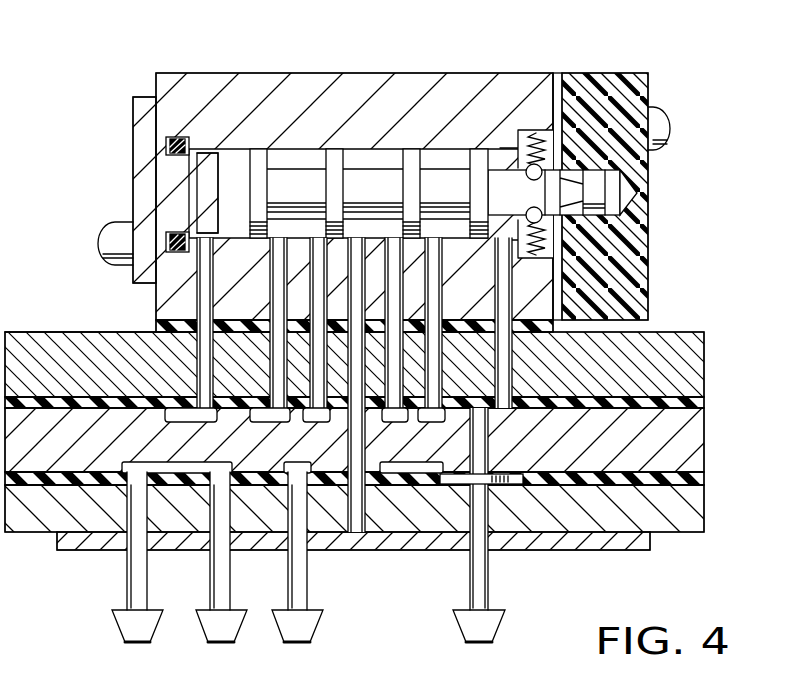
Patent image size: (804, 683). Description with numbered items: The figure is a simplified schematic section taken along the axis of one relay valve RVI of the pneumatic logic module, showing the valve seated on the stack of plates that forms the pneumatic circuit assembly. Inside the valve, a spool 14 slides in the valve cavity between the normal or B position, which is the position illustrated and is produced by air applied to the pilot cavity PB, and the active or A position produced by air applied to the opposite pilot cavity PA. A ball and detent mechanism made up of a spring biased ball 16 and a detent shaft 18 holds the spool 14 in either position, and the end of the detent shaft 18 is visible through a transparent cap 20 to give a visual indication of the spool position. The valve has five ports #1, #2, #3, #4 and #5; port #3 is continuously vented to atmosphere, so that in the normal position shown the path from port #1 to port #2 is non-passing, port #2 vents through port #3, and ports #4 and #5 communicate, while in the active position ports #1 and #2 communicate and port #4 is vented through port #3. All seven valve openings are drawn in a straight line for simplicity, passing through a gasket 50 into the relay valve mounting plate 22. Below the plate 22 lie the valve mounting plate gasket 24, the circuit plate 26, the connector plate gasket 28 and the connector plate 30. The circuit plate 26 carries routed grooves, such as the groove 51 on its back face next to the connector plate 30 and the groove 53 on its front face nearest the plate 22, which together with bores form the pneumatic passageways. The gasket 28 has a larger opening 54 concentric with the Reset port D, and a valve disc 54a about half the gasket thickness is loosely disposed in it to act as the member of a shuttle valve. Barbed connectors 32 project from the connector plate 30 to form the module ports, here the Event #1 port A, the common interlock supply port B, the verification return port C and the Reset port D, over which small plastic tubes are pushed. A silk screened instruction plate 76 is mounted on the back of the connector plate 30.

The relay valve RVI is at (243, 73).
The spool 14 is at (455, 183).
The spring biased ball 16 is at (533, 135).
The detent shaft 18 is at (597, 192).
The transparent cap 20 is at (643, 230).
The pilot cavity PA is at (505, 283).
The pilot cavity PB is at (205, 293).
The gasket 50 is at (142, 339).
The relay valve mounting plate 22 is at (707, 357).
The valve mounting plate gasket 24 is at (707, 401).
The circuit plate 26 is at (670, 434).
The connector plate gasket 28 is at (688, 477).
The connector plate 30 is at (665, 514).
The instruction plate 76 is at (652, 549).
The groove 51 is at (160, 463).
The groove 53 is at (252, 419).
The opening 54 is at (520, 487).
The valve disc 54a is at (502, 472).
The barbed connectors 32 is at (309, 582).
The port # 1 is at (432, 383).
The port # 2 is at (390, 384).
The port # 3 is at (350, 384).
The port # 4 is at (312, 382).
The port # 5 is at (272, 366).
The port A is at (118, 625).
The port B is at (215, 642).
The port C is at (298, 642).
The port D is at (478, 642).